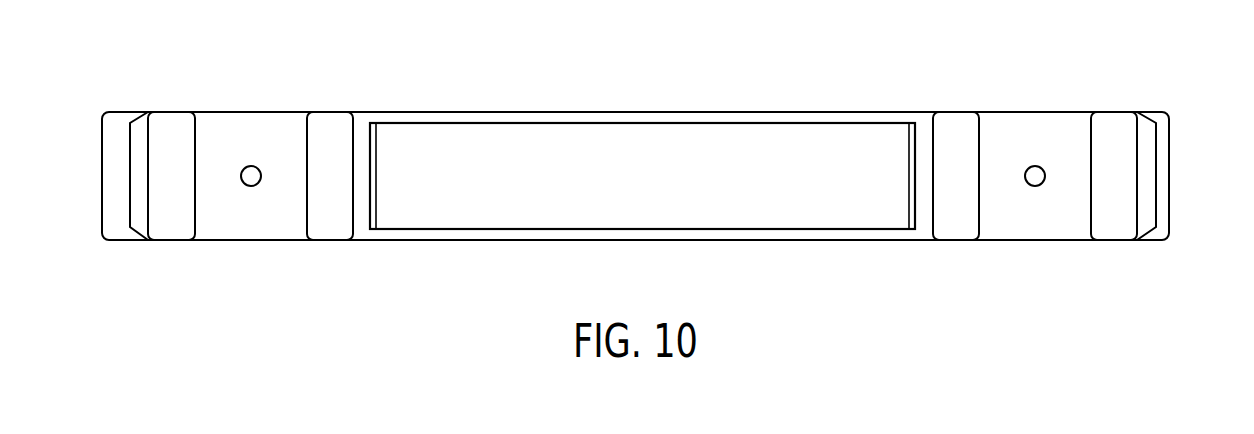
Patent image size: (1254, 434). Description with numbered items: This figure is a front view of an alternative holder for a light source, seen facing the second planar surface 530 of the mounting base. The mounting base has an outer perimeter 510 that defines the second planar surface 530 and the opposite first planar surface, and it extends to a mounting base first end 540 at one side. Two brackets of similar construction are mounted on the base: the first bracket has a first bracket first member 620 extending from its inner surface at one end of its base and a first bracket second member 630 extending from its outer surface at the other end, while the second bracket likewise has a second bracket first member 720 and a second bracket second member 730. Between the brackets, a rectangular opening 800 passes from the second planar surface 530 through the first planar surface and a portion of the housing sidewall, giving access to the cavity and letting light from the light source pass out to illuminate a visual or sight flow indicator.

The outer perimeter 510 is at (103, 216).
The second planar surface 530 is at (107, 133).
The mounting base first end 540 is at (1170, 177).
The first bracket first member 620 is at (1112, 231).
The first bracket second member 630 is at (953, 231).
The second bracket first member 720 is at (328, 231).
The second bracket second member 730 is at (161, 231).
The opening 800 is at (664, 133).